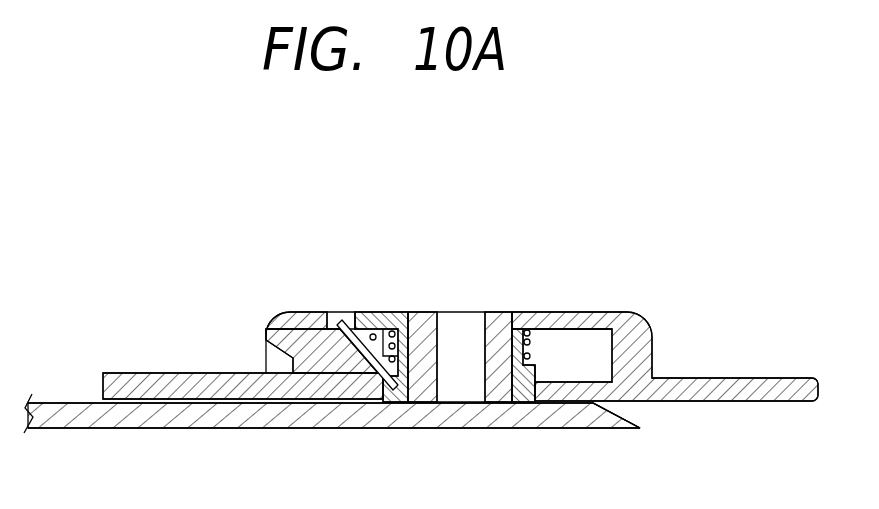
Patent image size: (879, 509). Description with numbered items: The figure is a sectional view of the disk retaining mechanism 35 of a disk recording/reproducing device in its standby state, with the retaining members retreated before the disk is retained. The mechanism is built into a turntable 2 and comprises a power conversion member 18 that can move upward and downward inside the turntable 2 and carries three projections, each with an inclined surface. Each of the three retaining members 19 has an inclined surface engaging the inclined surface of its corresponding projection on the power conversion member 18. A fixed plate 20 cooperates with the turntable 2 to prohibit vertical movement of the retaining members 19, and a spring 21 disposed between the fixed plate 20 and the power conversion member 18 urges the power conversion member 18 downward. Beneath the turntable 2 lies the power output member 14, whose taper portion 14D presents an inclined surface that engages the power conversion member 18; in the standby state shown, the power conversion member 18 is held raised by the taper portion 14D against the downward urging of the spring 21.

The turntable 2 is at (700, 378).
The power output member 14 is at (77, 401).
The taper portion 14D is at (632, 418).
The power conversion member 18 is at (390, 404).
The retaining member 19 is at (303, 312).
The fixed plate 20 is at (548, 312).
The spring 21 is at (532, 338).
The disk retaining mechanism 35 is at (452, 325).